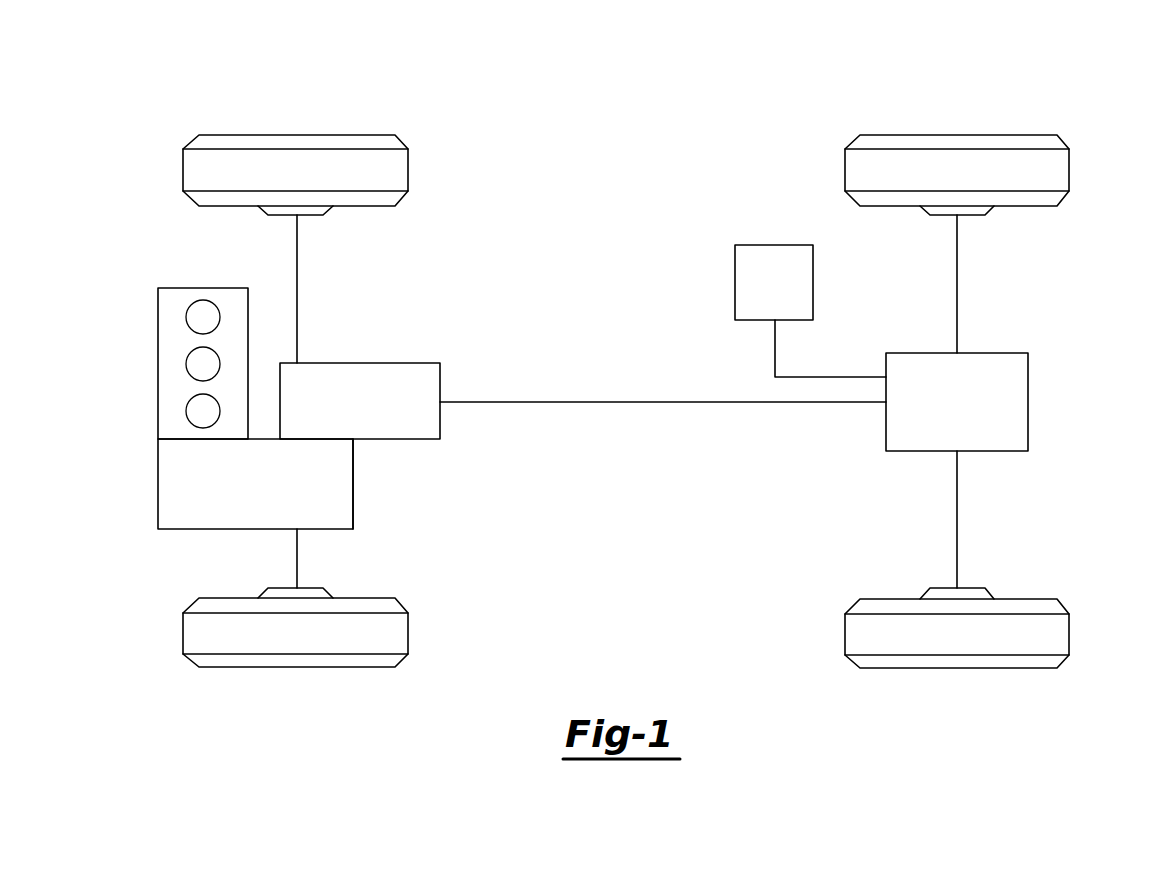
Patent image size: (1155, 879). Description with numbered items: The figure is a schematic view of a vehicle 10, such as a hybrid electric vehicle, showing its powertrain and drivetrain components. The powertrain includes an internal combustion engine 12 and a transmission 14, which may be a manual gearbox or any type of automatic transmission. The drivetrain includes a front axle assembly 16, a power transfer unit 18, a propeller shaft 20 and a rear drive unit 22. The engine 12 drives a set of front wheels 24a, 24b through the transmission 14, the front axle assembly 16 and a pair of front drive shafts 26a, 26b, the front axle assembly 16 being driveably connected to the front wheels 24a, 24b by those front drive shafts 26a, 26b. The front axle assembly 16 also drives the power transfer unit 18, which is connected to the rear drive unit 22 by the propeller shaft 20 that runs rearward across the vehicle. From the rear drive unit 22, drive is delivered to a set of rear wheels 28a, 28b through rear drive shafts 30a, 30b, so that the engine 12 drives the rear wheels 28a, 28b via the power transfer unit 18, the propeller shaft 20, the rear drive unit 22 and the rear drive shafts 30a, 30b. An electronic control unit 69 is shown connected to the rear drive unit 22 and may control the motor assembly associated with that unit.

The vehicle 10 is at (570, 190).
The internal combustion engine 12 is at (178, 288).
The transmission 14 is at (178, 487).
The front axle assembly 16 is at (333, 487).
The power transfer unit 18 is at (388, 363).
The propeller shaft 20 is at (663, 403).
The rear drive unit 22 is at (1054, 340).
The front wheel 24a is at (268, 667).
The front wheel 24b is at (268, 135).
The front drive shaft 26a is at (297, 558).
The front drive shaft 26b is at (297, 282).
The rear wheel 28a is at (983, 668).
The rear wheel 28b is at (985, 135).
The rear drive shaft 30a is at (957, 520).
The rear drive shaft 30b is at (957, 282).
The electronic control unit 69 is at (775, 245).